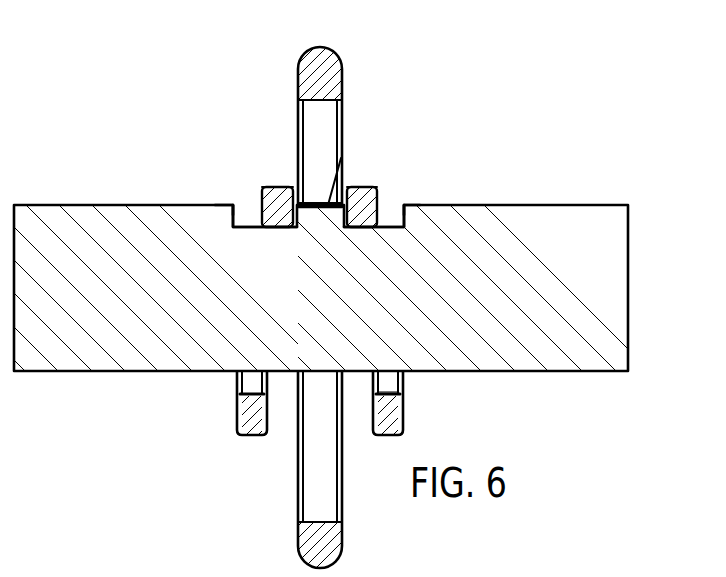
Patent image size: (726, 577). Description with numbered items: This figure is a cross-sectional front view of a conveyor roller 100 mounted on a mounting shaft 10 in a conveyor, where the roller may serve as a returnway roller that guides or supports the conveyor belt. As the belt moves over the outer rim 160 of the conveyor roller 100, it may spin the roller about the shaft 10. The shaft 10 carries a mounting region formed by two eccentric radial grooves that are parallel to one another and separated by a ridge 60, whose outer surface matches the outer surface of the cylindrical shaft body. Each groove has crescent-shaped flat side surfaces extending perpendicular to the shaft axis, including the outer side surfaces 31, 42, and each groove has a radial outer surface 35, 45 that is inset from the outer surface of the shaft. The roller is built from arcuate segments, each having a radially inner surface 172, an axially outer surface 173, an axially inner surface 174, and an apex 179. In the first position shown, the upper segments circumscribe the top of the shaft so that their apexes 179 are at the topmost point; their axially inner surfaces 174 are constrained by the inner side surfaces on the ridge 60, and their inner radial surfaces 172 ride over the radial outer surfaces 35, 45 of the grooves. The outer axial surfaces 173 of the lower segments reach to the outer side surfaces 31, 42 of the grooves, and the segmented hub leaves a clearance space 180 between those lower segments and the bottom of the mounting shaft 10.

The mounting shaft 10 is at (531, 169).
The conveyor roller 100 is at (354, 66).
The outer rim 160 is at (310, 67).
The ridge 60 is at (343, 160).
The axially inner surface 174 is at (291, 186).
The apex 179 is at (272, 187).
The radially inner surface 172 is at (272, 230).
The radial outer surface 35 is at (251, 226).
The flat side surface 31 is at (232, 203).
The radial outer surface 45 is at (383, 226).
The flat side surface 42 is at (402, 205).
The axially outer surface 173 is at (237, 421).
The clearance space 180 is at (395, 383).